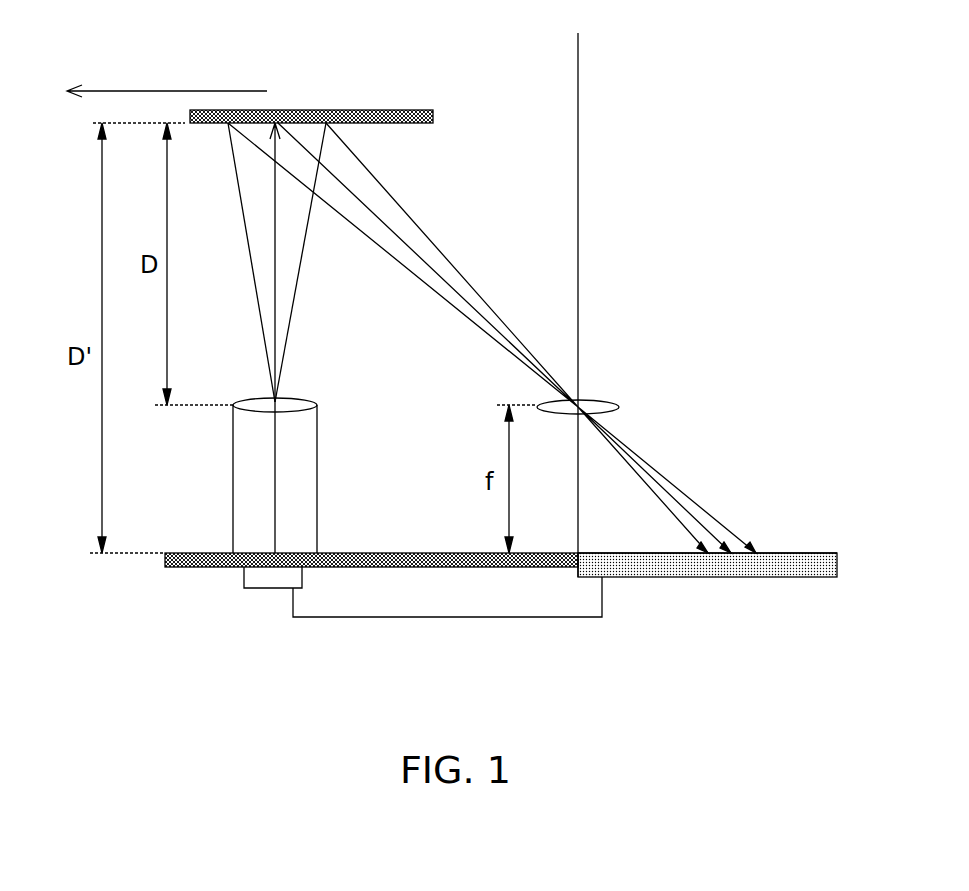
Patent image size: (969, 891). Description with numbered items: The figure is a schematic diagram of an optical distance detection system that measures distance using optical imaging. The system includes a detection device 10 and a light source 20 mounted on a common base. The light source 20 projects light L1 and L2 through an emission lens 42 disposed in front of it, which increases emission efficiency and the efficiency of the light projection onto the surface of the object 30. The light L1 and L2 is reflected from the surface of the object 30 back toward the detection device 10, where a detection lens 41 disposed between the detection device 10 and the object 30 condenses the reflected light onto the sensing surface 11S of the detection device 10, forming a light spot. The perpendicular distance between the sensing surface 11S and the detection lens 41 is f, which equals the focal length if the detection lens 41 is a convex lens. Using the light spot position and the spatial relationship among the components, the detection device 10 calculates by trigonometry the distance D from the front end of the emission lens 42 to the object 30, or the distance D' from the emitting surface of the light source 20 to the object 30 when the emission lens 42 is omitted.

The detection device 10 is at (650, 577).
The sensing surface 11S is at (805, 553).
The light source 20 is at (244, 575).
The object 30 is at (410, 110).
The detection lens 41 is at (608, 400).
The emission lens 42 is at (317, 487).
The light L1 is at (293, 305).
The light L2 is at (259, 310).